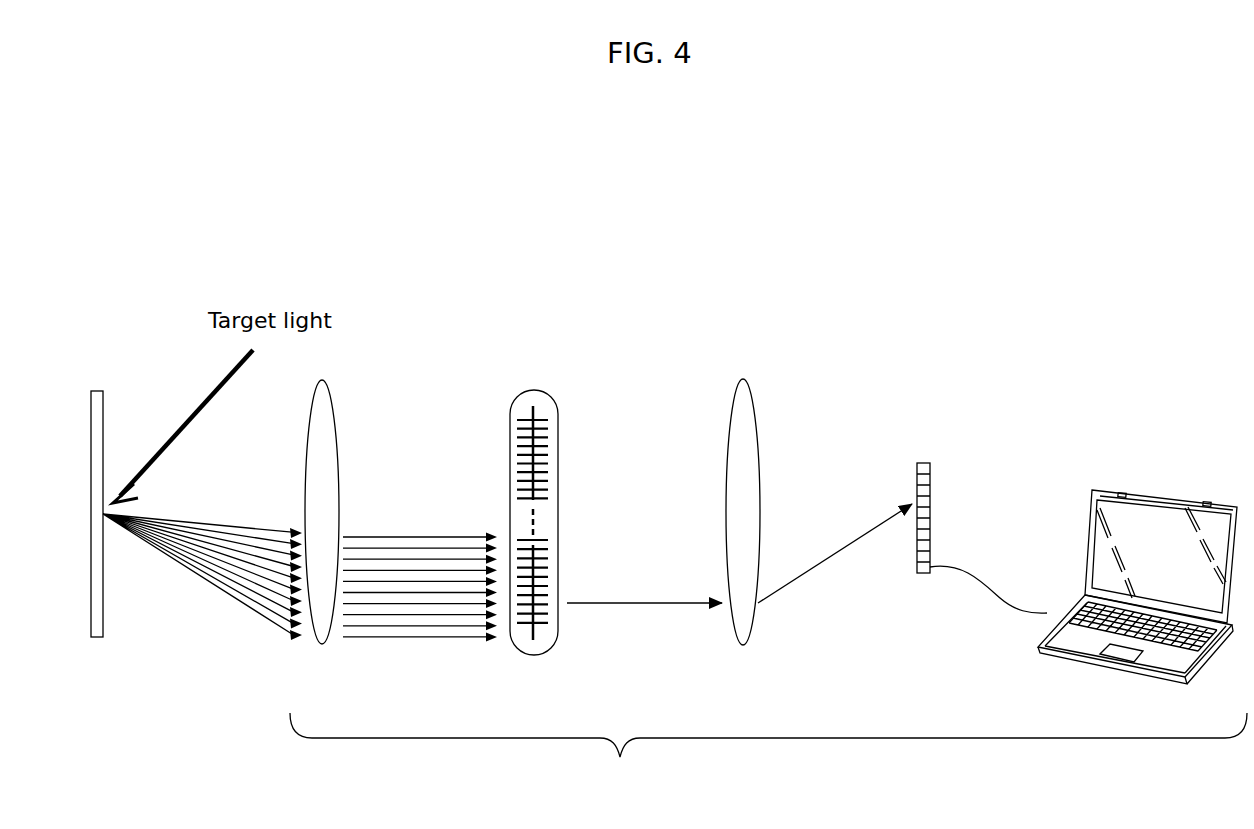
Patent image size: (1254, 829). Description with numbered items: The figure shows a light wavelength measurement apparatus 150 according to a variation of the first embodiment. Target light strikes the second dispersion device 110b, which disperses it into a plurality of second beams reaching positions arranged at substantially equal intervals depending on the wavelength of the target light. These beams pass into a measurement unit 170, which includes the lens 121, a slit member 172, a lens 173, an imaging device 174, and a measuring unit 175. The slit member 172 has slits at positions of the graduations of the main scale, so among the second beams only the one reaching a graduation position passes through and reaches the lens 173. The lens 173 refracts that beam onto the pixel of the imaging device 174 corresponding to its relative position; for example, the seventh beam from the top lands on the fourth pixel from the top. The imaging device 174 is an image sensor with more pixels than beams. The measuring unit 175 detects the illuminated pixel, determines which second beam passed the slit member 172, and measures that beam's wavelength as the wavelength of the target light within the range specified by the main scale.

The light wavelength measurement apparatus 150 is at (626, 251).
The second dispersion device 110b is at (98, 390).
The lens 121 is at (323, 381).
The slit member 172 is at (530, 390).
The lens 173 is at (745, 387).
The imaging device 174 is at (932, 462).
The measuring unit 175 is at (1153, 497).
The measurement unit 170 is at (768, 753).